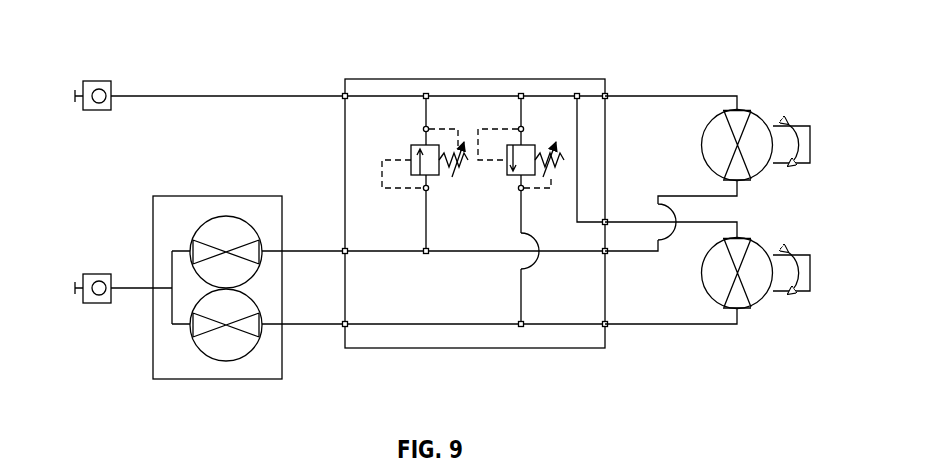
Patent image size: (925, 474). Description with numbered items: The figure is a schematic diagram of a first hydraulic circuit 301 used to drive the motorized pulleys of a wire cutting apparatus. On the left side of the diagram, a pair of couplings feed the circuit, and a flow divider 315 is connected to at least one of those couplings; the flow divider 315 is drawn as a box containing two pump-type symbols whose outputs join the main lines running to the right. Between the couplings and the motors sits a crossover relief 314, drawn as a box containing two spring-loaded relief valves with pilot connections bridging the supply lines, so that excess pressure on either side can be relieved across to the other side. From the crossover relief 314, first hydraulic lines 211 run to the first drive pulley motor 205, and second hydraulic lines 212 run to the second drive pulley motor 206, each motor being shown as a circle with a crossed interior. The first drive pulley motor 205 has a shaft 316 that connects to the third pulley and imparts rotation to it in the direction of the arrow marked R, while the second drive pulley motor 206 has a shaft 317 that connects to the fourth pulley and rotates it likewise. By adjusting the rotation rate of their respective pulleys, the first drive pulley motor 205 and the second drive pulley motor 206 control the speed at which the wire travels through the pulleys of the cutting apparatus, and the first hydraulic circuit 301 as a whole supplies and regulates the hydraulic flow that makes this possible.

The first hydraulic circuit 301 is at (488, 223).
The crossover relief 314 is at (491, 80).
The flow divider 315 is at (208, 196).
The first hydraulic lines 211 is at (683, 196).
The second hydraulic lines 212 is at (697, 224).
The first drive pulley motor 205 is at (749, 108).
The second drive pulley motor 206 is at (754, 307).
The shaft 316 is at (811, 140).
The shaft 317 is at (811, 266).